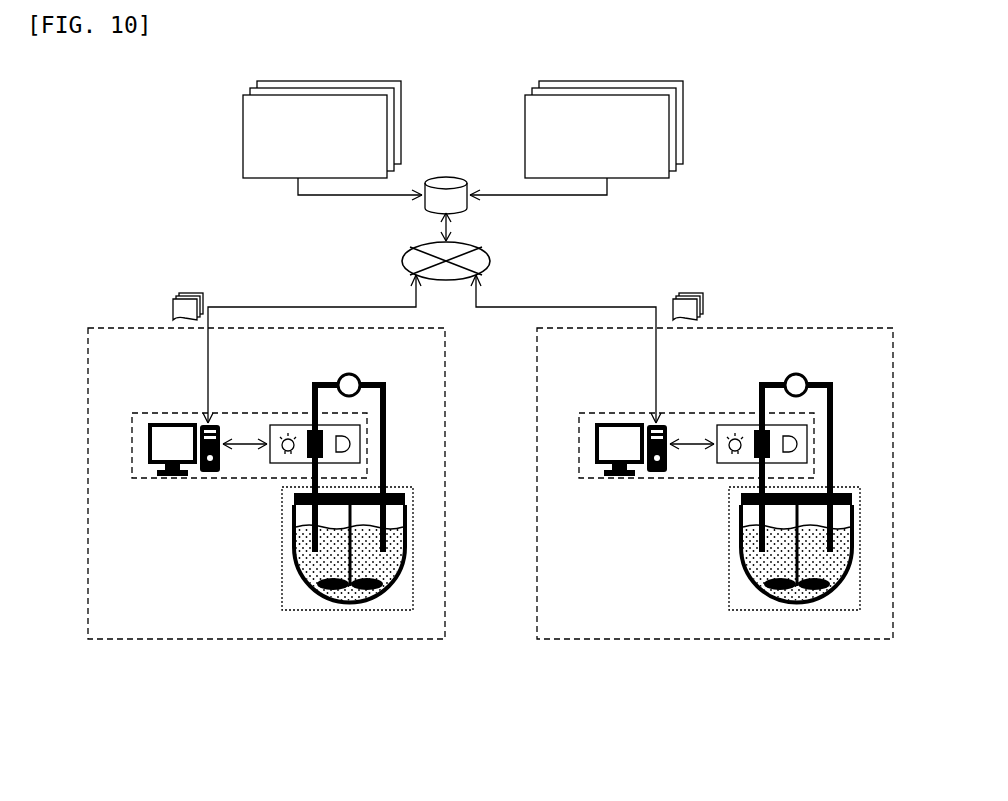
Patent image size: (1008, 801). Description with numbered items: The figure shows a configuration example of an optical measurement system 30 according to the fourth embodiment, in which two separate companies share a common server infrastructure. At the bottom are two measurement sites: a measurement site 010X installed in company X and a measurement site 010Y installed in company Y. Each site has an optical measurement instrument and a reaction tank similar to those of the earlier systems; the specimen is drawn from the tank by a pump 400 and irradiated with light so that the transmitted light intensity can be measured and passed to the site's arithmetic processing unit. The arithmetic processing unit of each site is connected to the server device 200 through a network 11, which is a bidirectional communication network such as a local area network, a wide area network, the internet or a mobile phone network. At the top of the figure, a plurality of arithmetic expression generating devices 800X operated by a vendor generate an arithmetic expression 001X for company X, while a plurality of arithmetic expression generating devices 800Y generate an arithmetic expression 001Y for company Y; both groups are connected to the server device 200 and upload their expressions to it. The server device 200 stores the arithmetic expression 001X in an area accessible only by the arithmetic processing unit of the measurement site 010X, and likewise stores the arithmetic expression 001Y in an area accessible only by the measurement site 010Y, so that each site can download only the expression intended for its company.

The manufacturing support system 30 is at (805, 206).
The arithmetic expression generating device 800X is at (255, 176).
The arithmetic expression generating device 800Y is at (643, 179).
The server device 200 is at (440, 179).
The network 11 is at (483, 253).
The arithmetic expression 001X is at (172, 298).
The arithmetic expression 001Y is at (672, 298).
The measurement site 010X is at (142, 640).
The measurement site 010Y is at (596, 640).
The pump 400 is at (796, 446).